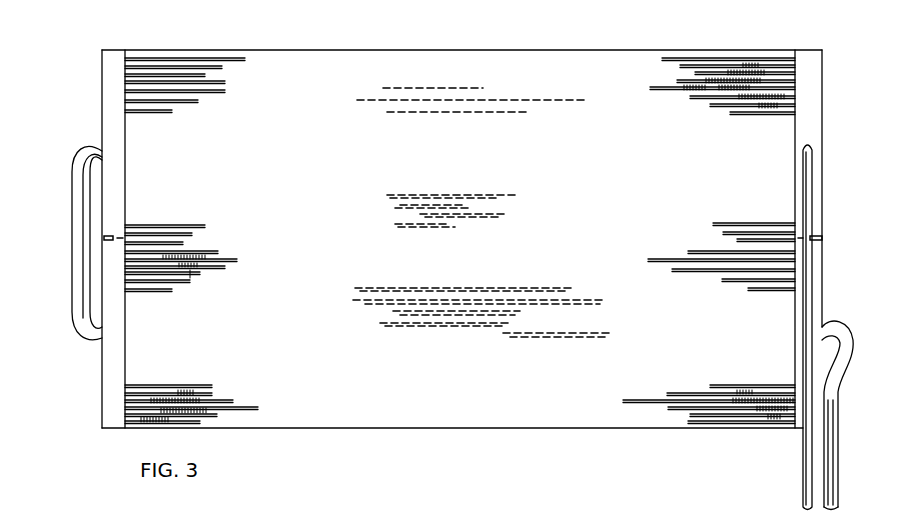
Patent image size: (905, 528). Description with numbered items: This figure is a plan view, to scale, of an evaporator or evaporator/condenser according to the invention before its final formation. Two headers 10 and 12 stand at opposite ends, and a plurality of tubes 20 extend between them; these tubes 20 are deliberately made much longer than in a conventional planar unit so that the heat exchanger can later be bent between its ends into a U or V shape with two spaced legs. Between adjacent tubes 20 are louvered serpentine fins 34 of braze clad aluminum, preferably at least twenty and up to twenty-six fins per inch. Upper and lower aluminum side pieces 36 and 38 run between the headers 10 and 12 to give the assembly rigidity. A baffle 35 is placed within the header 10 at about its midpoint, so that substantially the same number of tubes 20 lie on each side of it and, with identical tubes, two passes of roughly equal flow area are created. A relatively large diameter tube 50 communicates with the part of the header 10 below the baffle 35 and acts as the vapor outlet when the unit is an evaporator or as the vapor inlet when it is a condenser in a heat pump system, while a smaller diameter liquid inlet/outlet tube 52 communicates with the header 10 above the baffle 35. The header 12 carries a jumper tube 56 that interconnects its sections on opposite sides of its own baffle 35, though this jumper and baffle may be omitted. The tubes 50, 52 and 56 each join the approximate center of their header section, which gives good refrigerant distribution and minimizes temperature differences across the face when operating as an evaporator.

The header 10 is at (813, 116).
The header 12 is at (107, 86).
The tubes 20 is at (210, 95).
The louvered serpentine fins 34 is at (694, 97).
The baffle 35 is at (108, 237).
The upper side piece 36 is at (538, 50).
The lower side piece 38 is at (392, 428).
The large diameter tube 50 is at (853, 343).
The liquid inlet/outlet tube 52 is at (807, 457).
The jumper tube 56 is at (72, 180).